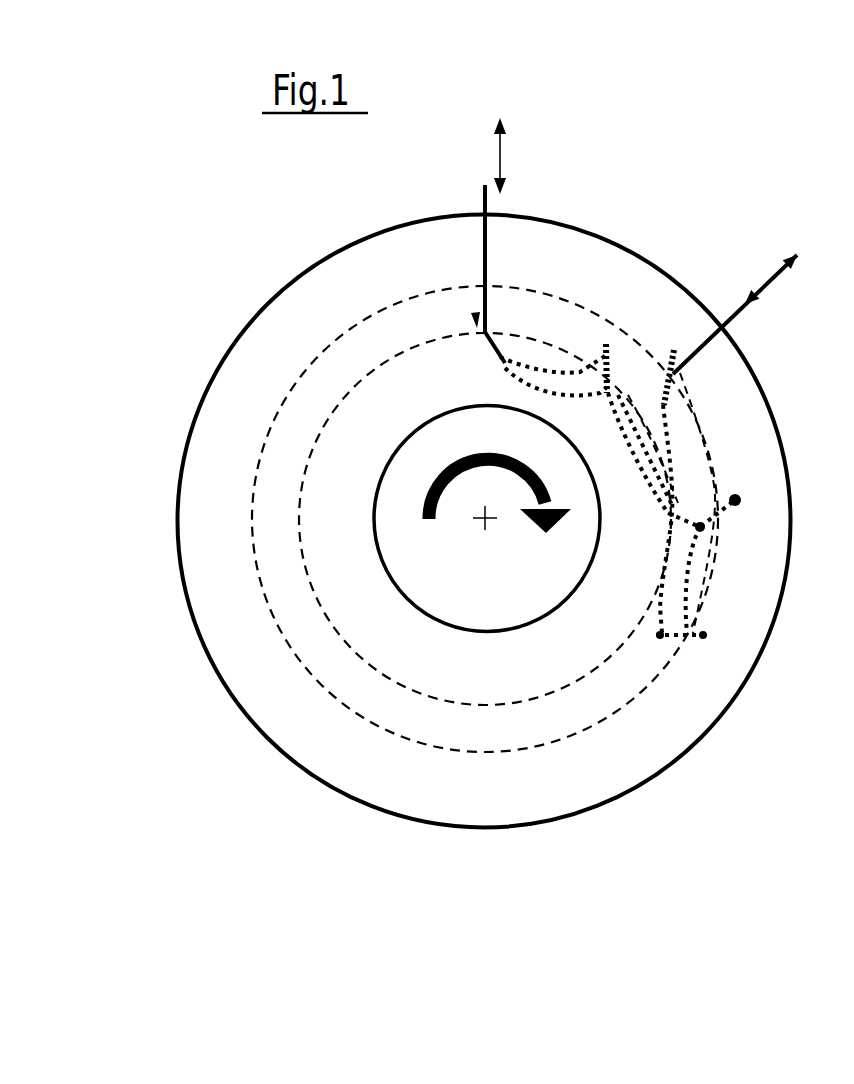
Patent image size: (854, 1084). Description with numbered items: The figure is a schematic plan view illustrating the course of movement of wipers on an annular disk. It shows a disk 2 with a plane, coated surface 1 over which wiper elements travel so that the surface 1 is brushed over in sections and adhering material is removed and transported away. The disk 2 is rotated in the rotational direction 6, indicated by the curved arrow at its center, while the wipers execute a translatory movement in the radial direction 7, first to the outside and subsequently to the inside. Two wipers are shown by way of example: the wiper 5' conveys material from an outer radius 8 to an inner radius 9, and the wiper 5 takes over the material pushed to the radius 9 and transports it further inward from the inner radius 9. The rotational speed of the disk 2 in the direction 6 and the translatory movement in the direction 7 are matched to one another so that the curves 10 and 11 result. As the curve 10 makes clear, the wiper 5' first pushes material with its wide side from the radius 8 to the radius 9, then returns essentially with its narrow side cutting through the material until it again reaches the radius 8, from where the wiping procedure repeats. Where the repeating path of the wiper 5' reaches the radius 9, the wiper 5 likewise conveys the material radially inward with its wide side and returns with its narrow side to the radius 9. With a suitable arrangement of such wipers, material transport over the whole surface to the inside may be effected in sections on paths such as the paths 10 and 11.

The plane surface 1 is at (237, 488).
The disk 2 is at (197, 617).
The wiper 5 is at (536, 380).
The wiper 5' is at (736, 330).
The rotational direction 6 is at (520, 460).
The radial direction 7 is at (503, 151).
The outer radius 8 is at (665, 667).
The inner radius 9 is at (552, 697).
The curve 10 is at (703, 635).
The curve 11 is at (677, 483).